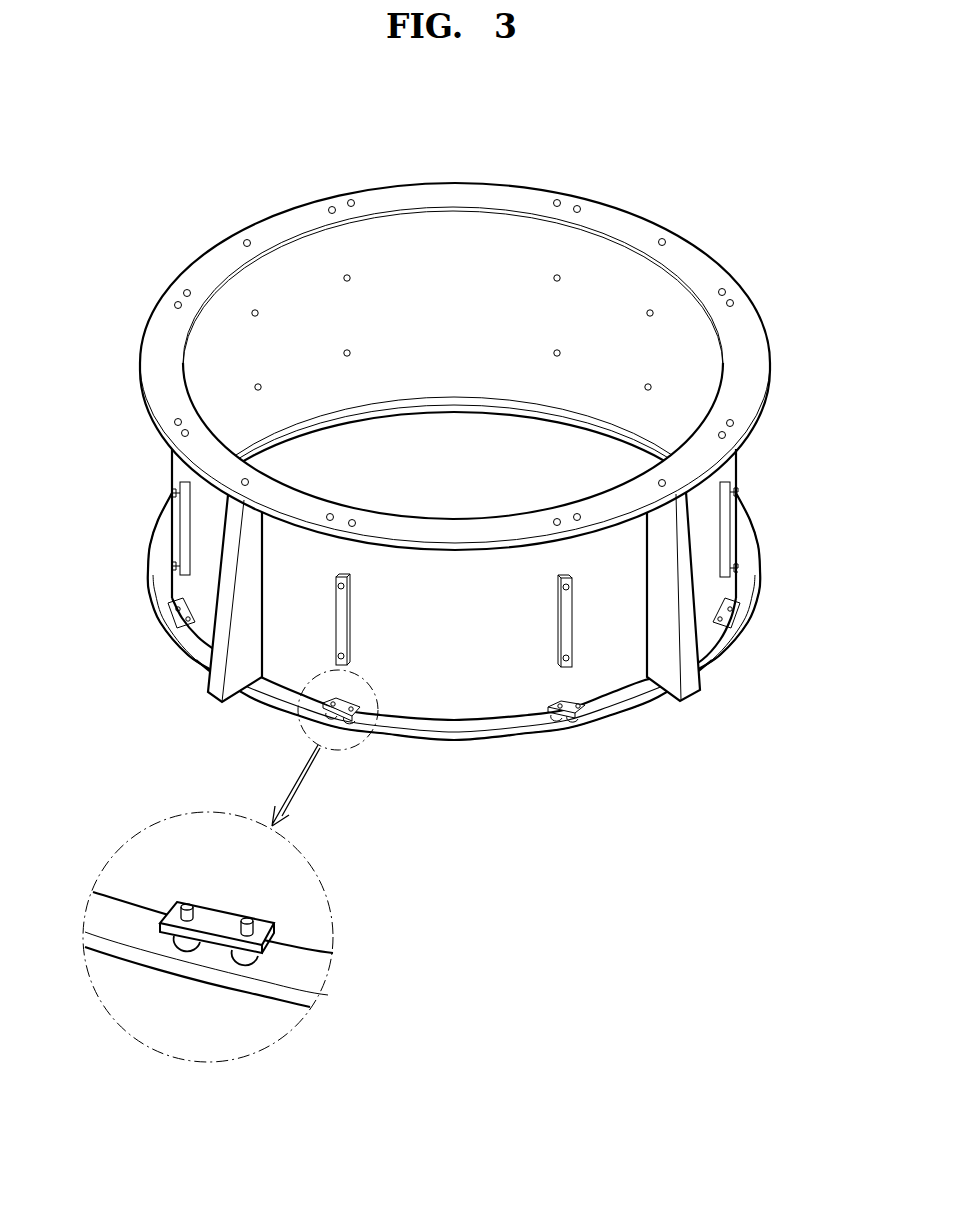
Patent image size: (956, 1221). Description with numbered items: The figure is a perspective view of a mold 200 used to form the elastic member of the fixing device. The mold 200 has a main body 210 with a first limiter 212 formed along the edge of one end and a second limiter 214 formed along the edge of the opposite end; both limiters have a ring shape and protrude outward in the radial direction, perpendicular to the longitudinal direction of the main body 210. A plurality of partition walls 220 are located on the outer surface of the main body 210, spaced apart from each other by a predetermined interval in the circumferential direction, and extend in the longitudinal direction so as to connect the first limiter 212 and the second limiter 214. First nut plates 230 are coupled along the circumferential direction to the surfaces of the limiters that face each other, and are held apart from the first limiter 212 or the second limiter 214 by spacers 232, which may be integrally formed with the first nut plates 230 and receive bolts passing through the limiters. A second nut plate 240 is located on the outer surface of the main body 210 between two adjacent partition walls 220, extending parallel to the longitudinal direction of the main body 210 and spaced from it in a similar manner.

The mold 200 is at (752, 190).
The main body 210 is at (440, 646).
The first limiter 212 is at (491, 726).
The second limiter 214 is at (165, 396).
The partition walls 220 is at (672, 633).
The first nut plates 230 is at (568, 712).
The spacers 232 is at (245, 962).
The second nut plate 240 is at (568, 620).